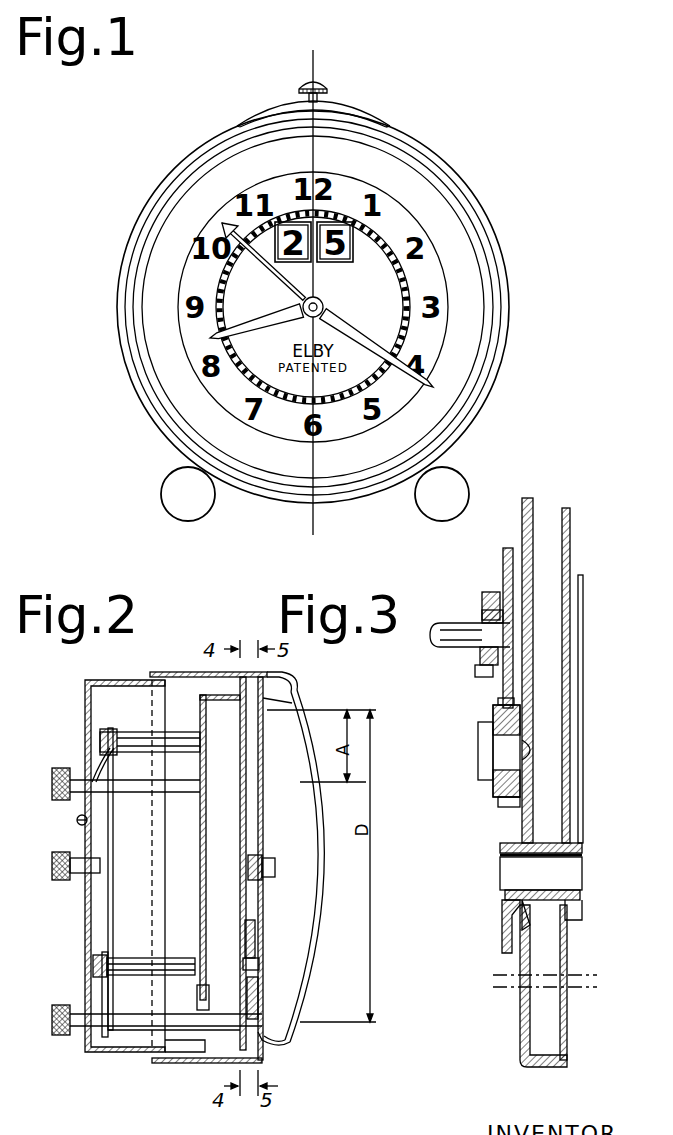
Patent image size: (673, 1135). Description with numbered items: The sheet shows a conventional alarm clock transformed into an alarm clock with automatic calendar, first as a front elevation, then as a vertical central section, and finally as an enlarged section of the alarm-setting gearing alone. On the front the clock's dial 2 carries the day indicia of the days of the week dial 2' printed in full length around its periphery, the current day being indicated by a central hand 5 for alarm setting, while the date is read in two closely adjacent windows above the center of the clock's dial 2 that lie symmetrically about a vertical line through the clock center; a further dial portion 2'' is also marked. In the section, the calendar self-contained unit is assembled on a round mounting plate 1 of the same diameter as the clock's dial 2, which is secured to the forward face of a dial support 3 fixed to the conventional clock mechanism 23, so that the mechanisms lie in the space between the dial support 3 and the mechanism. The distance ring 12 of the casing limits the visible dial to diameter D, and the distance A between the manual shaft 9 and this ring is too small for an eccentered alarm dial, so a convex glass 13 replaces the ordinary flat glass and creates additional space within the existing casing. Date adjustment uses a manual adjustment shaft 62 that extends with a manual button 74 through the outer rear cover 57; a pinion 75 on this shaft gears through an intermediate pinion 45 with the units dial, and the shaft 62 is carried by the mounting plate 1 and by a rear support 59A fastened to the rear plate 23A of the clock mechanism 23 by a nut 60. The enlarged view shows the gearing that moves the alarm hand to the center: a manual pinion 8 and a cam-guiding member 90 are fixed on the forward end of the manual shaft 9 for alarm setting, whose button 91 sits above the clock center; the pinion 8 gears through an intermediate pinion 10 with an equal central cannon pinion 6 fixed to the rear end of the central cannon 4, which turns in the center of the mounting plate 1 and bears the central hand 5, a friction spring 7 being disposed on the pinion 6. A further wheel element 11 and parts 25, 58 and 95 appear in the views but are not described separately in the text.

In FIG. 2, the mounting plate 1 is at (247, 905).
In FIG. 3, the mounting plate 1 is at (520, 1037).
In FIG. 1, the clock's dial 2 is at (313, 296).
In FIG. 2, the clock's dial 2 is at (338, 908).
In FIG. 3, the clock's dial 2 is at (586, 982).
In FIG. 1, the days of the week dial 2' is at (335, 307).
In FIG. 1, the day ring 2'' is at (323, 394).
In FIG. 2, the dial support 3 is at (218, 1043).
In FIG. 2, the central cannon 4 is at (275, 863).
In FIG. 3, the central cannon 4 is at (577, 878).
In FIG. 3, the central hand for alarm setting 5 is at (584, 790).
In FIG. 3, the central cannon pinion 6 is at (500, 953).
In FIG. 3, the spring 7 is at (527, 923).
In FIG. 3, the manual pinion for alarm setting 8 is at (503, 690).
In FIG. 2, the manual shaft for alarm setting 9 is at (127, 790).
In FIG. 3, the manual shaft for alarm setting 9 is at (443, 648).
In FIG. 3, the cam-guiding member 90 is at (482, 598).
In FIG. 3, the intermediate pinion 10 is at (500, 800).
In FIG. 3, the gear wheel 11 is at (485, 762).
In FIG. 2, the distance ring 12 is at (272, 702).
In FIG. 2, the convex glass 13 is at (318, 975).
In FIG. 2, the clock mechanism 23 is at (197, 880).
In FIG. 2, the rear plate 23A is at (133, 906).
In FIG. 2, the rod 25 is at (140, 958).
In FIG. 2, the intermediate pinion 45 is at (257, 990).
In FIG. 2, the outer rear cover 57 is at (86, 707).
In FIG. 2, the spring clip 58 is at (100, 773).
In FIG. 2, the rear support 59A is at (102, 1003).
In FIG. 2, the nut 60 is at (93, 965).
In FIG. 2, the manual adjustment shaft 62 is at (131, 1030).
In FIG. 2, the manual button 74 is at (58, 1036).
In FIG. 2, the pinion 75 is at (258, 1020).
In FIG. 2, the button 91 is at (53, 798).
In FIG. 2, the knob 95 is at (52, 880).